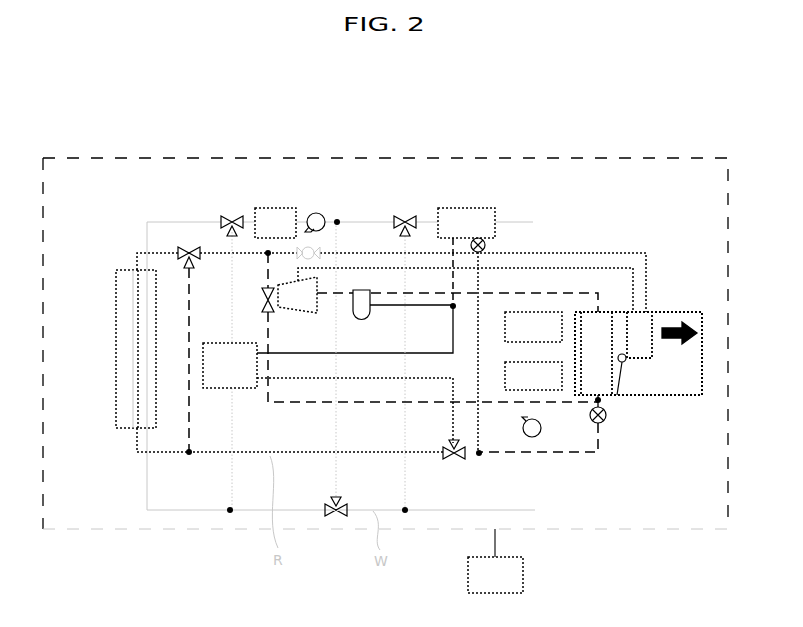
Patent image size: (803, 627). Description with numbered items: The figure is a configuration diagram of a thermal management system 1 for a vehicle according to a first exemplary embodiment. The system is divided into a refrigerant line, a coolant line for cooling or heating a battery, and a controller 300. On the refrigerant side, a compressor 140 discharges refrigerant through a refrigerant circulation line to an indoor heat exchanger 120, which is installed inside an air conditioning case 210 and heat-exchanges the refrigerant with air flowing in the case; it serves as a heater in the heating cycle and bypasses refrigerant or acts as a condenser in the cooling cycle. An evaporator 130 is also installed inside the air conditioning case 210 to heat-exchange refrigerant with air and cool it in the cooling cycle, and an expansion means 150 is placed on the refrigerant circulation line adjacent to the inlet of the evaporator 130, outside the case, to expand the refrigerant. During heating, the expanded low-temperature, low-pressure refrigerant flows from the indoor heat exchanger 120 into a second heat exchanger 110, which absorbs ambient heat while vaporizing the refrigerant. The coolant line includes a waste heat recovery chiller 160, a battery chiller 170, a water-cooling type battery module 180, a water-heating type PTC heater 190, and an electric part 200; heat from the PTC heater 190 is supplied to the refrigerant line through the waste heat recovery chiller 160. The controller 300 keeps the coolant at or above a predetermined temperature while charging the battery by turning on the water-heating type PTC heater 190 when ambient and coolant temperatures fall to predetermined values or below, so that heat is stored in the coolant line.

The thermal management system for vehicle 1 is at (428, 147).
The second heat exchanger 110 is at (126, 268).
The indoor heat exchanger 120 is at (651, 310).
The evaporator 130 is at (604, 322).
The compressor 140 is at (318, 284).
The expansion means 150 is at (606, 418).
The waste heat recovery chiller 160 is at (203, 365).
The battery chiller 170 is at (471, 207).
The water-cooling type battery module 180 is at (558, 392).
The water-heating type PTC heater 190 is at (553, 312).
The electric part 200 is at (276, 207).
The air conditioning case 210 is at (681, 311).
The controller 300 is at (523, 572).